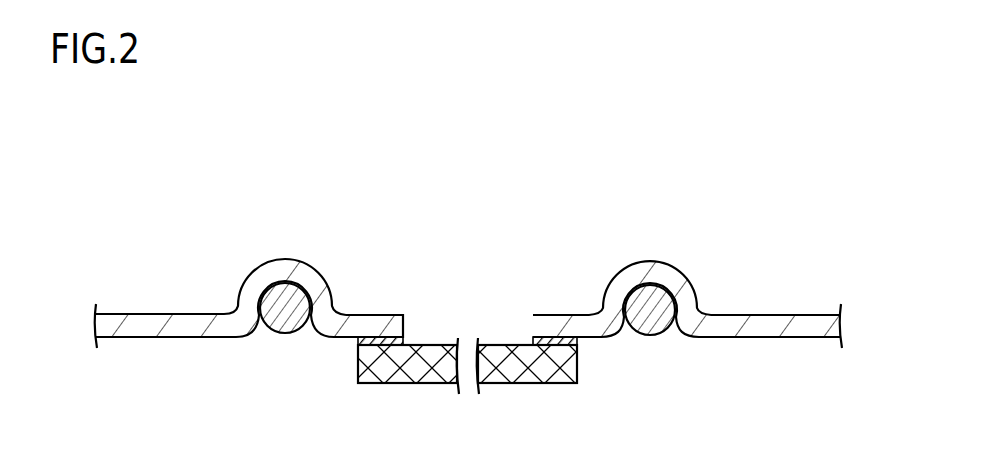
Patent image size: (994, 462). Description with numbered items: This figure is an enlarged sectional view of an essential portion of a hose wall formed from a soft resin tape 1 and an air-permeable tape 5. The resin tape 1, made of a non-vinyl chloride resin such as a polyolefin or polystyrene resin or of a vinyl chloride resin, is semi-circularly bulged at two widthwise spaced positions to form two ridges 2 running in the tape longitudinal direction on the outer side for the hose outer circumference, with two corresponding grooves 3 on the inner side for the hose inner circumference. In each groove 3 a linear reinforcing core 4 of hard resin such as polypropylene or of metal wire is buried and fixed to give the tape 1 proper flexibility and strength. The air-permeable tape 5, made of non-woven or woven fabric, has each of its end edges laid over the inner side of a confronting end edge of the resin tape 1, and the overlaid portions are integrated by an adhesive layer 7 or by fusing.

The soft resin tape 1 is at (187, 312).
The ridge 2 is at (297, 262).
The groove 3 is at (311, 330).
The linear reinforcing core 4 is at (284, 322).
The air-permeable tape 5 is at (185, 338).
The adhesive layer 7 is at (403, 343).